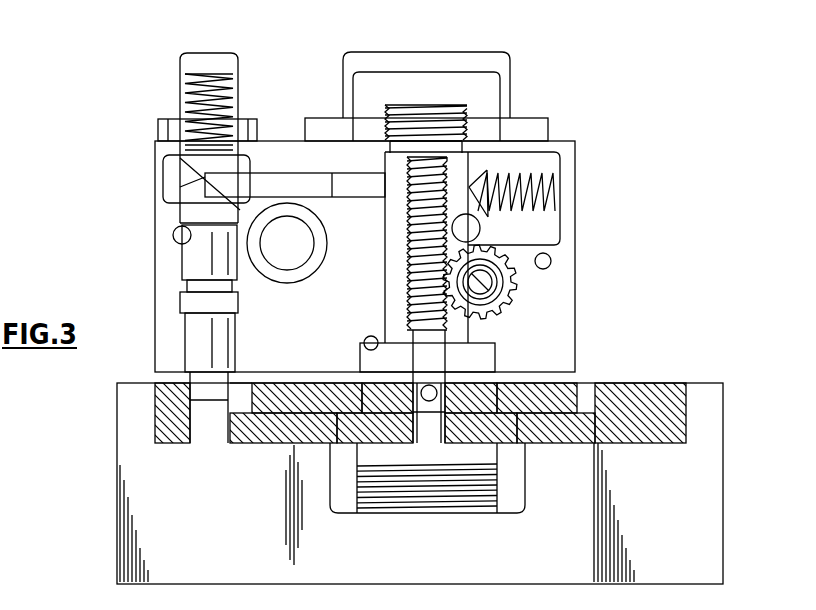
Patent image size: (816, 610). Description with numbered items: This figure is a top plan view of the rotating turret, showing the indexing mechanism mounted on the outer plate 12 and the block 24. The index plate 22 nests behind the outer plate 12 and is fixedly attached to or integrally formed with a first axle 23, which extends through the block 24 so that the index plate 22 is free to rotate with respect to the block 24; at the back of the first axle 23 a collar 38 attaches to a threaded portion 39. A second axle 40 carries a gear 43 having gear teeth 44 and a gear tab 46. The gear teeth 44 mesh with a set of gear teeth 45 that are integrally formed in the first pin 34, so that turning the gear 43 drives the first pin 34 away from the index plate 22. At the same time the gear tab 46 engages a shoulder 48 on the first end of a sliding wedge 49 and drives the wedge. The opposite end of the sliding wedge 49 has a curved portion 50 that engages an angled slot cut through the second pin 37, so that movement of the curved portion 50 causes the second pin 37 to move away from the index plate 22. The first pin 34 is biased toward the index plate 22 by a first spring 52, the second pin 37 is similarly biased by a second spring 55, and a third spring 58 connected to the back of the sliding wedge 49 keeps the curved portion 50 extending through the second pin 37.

The outer plate 12 is at (700, 557).
The index plate 22 is at (652, 382).
The first axle 23 is at (399, 276).
The block 24 is at (560, 333).
The first pin 34 is at (430, 335).
The second pin 37 is at (207, 248).
The collar 38 is at (378, 78).
The threaded portion 39 is at (433, 108).
The second axle 40 is at (490, 283).
The gear 43 is at (552, 261).
The gear teeth 44 is at (510, 303).
The set of gear teeth 45 is at (447, 323).
The gear tab 46 is at (560, 243).
The shoulder 48 is at (478, 218).
The sliding wedge 49 is at (262, 182).
The curved portion 50 is at (205, 178).
The first spring 52 is at (410, 228).
The second spring 55 is at (226, 86).
The third spring 58 is at (548, 187).